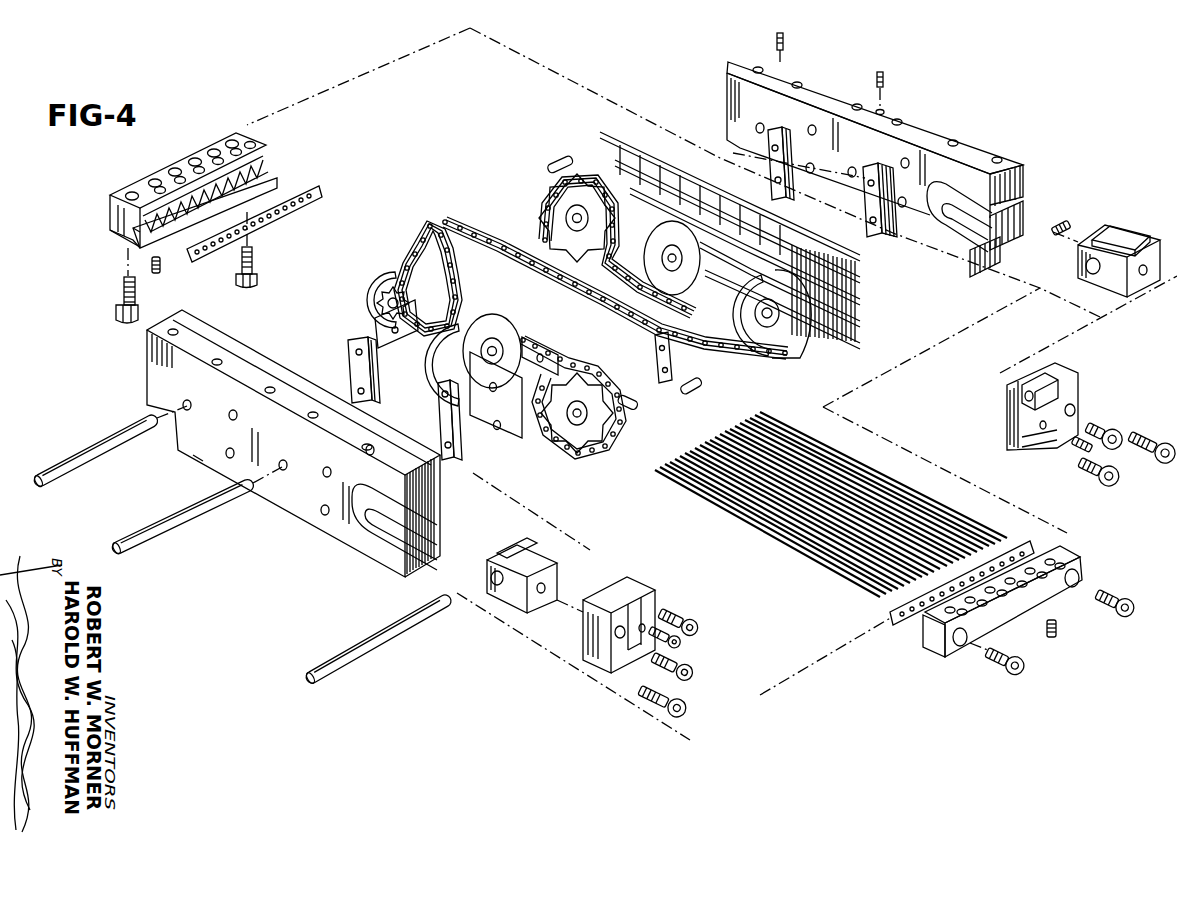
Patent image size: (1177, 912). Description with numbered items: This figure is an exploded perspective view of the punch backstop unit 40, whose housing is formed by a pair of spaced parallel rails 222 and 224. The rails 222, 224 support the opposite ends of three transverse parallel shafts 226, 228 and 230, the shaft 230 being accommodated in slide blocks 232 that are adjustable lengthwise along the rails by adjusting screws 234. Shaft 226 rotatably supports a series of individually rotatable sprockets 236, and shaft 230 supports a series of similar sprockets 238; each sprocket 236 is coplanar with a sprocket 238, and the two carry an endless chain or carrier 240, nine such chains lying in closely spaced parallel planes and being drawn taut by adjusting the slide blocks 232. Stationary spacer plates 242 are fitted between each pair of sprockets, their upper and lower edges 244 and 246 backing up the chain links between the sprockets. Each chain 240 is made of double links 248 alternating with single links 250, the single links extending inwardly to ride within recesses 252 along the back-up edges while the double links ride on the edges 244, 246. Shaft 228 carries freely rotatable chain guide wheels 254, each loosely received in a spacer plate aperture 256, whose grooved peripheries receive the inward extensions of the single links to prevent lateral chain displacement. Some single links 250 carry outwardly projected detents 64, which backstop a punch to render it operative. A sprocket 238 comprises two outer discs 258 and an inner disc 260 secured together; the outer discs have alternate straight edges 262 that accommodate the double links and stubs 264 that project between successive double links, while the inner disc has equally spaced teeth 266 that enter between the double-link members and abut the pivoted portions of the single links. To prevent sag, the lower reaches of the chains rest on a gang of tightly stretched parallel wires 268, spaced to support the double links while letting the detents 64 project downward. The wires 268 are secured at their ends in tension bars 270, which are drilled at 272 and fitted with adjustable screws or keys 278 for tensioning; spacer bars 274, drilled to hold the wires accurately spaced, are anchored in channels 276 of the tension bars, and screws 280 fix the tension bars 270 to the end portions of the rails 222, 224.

The punch backstop unit 40 is at (157, 370).
The detent 64 is at (618, 148).
The rail 222 is at (193, 456).
The rail 224 is at (933, 127).
The shaft 226 is at (88, 447).
The shaft 228 is at (217, 507).
The shaft 230 is at (377, 640).
The slide block 232 is at (1123, 237).
The adjusting screw 234 is at (687, 707).
The sprocket 236 is at (380, 277).
The sprocket 238 is at (592, 443).
The endless chain or carrier 240 is at (562, 162).
The spacer plate 242 is at (470, 418).
The upper edge 244 is at (377, 293).
The lower edge 246 is at (378, 330).
The double link 248 is at (650, 352).
The single link 250 is at (428, 226).
The recess 252 is at (533, 442).
The chain guide wheel 254 is at (493, 315).
The spacer plate aperture 256 is at (350, 363).
The outer disc 258 is at (590, 447).
The inner disc 260 is at (622, 405).
The straight edge 262 is at (528, 338).
The stub 264 is at (395, 262).
The tooth 266 is at (623, 440).
The wire 268 is at (800, 540).
The tension bar 270 is at (153, 170).
The drilled hole 272 is at (214, 152).
The spacer bar 274 is at (317, 187).
The channel 276 is at (128, 235).
The adjustable screw or key 278 is at (162, 267).
The screw 280 is at (120, 290).